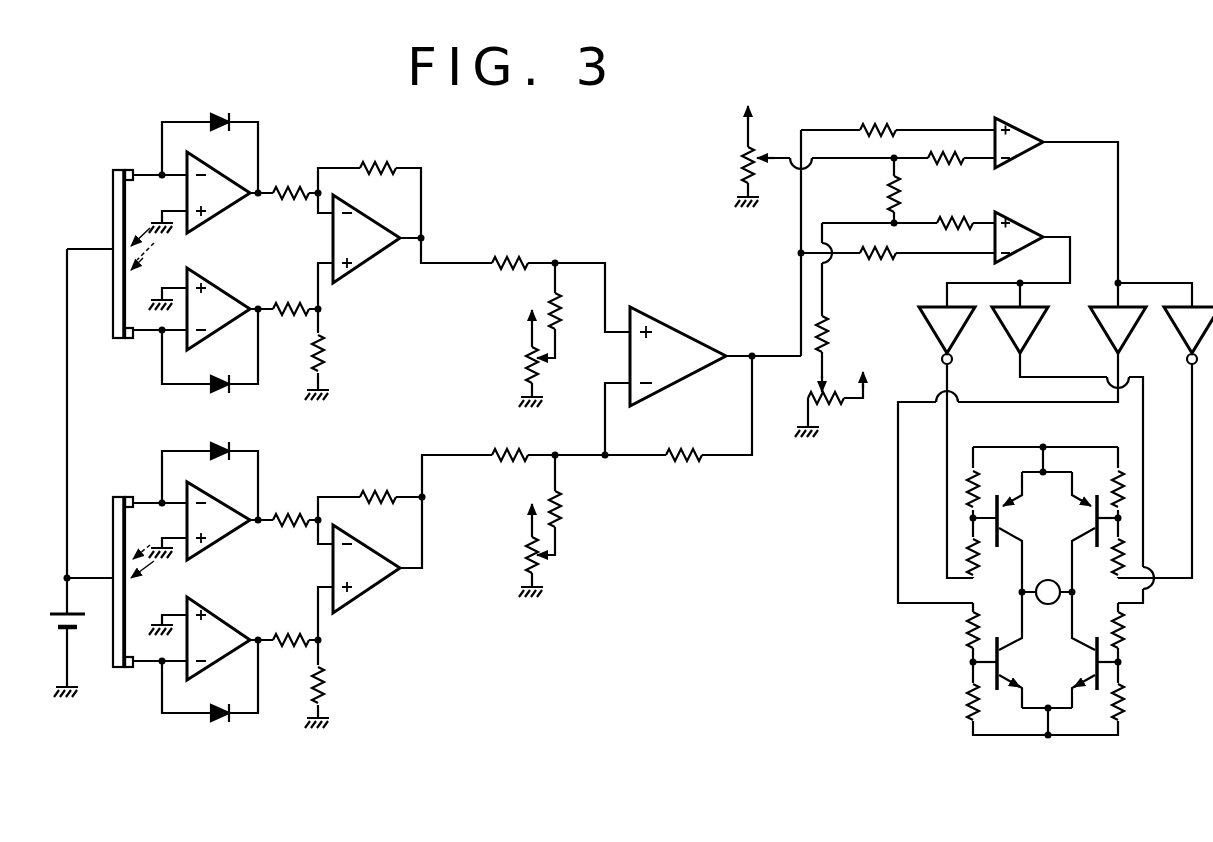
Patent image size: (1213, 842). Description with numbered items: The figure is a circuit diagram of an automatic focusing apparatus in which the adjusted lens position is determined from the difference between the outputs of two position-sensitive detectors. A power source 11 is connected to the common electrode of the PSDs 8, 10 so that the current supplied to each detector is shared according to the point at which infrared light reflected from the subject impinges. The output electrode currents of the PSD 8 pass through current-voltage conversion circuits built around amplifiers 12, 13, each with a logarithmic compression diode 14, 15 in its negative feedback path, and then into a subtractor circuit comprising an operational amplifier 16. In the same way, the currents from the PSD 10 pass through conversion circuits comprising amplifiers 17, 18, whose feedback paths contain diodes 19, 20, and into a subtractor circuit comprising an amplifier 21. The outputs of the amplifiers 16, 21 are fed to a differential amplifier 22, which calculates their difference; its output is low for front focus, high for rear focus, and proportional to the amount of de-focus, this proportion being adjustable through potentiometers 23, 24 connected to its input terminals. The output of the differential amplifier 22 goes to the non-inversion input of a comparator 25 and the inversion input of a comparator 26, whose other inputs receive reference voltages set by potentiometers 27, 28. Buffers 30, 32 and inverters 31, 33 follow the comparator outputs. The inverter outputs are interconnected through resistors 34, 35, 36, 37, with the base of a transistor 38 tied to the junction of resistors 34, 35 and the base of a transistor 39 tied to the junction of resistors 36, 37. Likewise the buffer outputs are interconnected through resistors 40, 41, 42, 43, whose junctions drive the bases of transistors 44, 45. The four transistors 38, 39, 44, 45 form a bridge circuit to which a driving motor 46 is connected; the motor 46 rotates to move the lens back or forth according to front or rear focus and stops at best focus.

The PSD 8 is at (113, 567).
The PSD 10 is at (114, 272).
The power source 11 is at (79, 628).
The amplifier 12 is at (218, 540).
The amplifier 13 is at (211, 664).
The logarithmic compression diode 14 is at (210, 445).
The logarithmic compression diode 15 is at (219, 722).
The operational amplifier 16 is at (360, 596).
The amplifier 17 is at (215, 215).
The amplifier 18 is at (207, 336).
The diode 19 is at (223, 113).
The diode 20 is at (228, 391).
The amplifier 21 is at (355, 269).
The differential amplifier 22 is at (672, 335).
The potentiometer 23 is at (527, 556).
The potentiometer 24 is at (525, 355).
The comparator 25 is at (1015, 130).
The comparator 26 is at (1012, 223).
The potentiometer 27 is at (741, 164).
The potentiometer 28 is at (832, 409).
The buffer 30 is at (1097, 320).
The inverter 31 is at (1183, 320).
The buffer 32 is at (1009, 331).
The inverter 33 is at (932, 331).
The resistor 34 is at (1125, 553).
The resistor 35 is at (1125, 490).
The resistor 36 is at (965, 490).
The resistor 37 is at (965, 550).
The transistor 38 is at (1082, 502).
The transistor 39 is at (1013, 503).
The resistor 40 is at (965, 628).
The resistor 41 is at (965, 700).
The resistor 42 is at (1125, 700).
The resistor 43 is at (1125, 630).
The transistor 44 is at (1012, 645).
The transistor 45 is at (1089, 670).
The driving motor 46 is at (1048, 580).